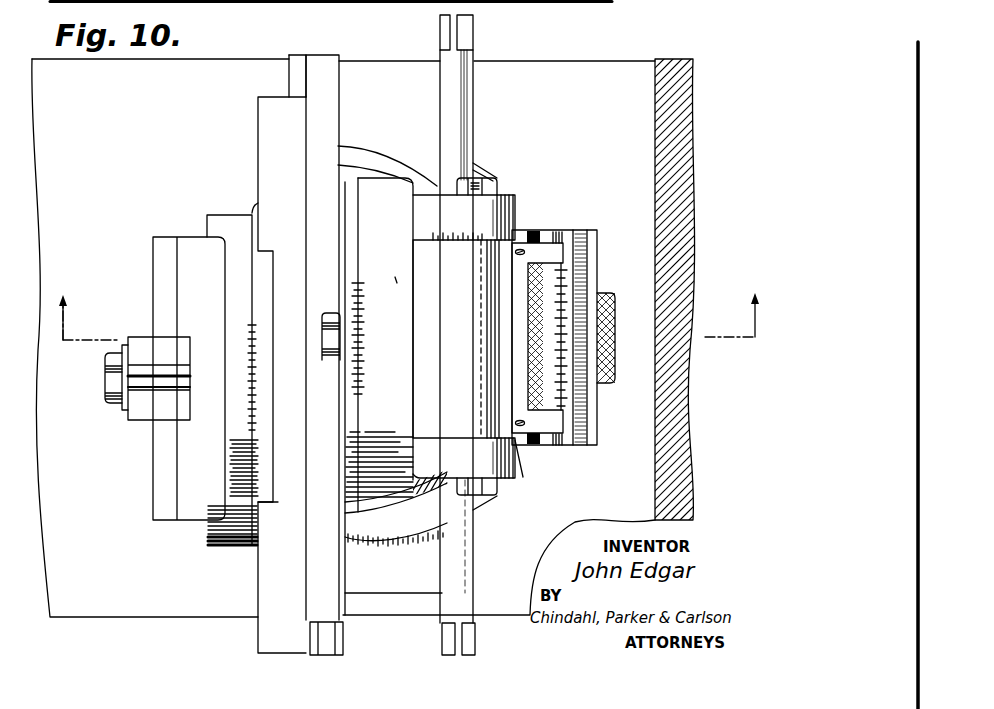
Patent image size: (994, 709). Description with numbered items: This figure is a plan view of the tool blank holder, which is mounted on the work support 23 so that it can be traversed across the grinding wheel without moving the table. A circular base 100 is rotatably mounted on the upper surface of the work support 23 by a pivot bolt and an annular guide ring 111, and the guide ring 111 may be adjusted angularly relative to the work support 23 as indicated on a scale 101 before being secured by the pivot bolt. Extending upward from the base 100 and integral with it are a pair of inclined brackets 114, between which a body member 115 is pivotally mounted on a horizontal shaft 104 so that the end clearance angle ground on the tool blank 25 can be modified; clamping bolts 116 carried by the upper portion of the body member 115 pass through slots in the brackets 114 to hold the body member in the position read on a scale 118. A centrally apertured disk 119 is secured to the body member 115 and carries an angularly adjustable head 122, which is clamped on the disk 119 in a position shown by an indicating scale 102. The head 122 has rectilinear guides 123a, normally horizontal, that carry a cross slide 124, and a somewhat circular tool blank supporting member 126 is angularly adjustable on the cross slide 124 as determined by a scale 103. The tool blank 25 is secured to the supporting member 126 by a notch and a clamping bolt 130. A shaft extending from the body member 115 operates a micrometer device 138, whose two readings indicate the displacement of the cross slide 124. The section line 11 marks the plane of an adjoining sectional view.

The work support 23 is at (607, 67).
The rectilinear guides 123a is at (293, 75).
The cross slide 124 is at (267, 178).
The scale 103 is at (246, 391).
The tool blank supporting member 126 is at (190, 283).
The tool blank 25 is at (140, 343).
The clamping bolt 130 is at (118, 403).
The angularly adjustable member (head) 122 is at (348, 193).
The annular guide ring 111 is at (408, 157).
The circular base 100 is at (377, 172).
The centrally apertured disk 119 is at (395, 277).
The indicating scale 102 is at (372, 330).
The scale 101 is at (387, 552).
The horizontal shaft 104 is at (456, 104).
The clamping bolts 116 is at (490, 176).
The body member 115 is at (458, 376).
The inclined brackets 114 is at (498, 200).
The scale 118 is at (458, 252).
The micrometer device 138 is at (575, 222).
The section line 11- 11 is at (411, 327).